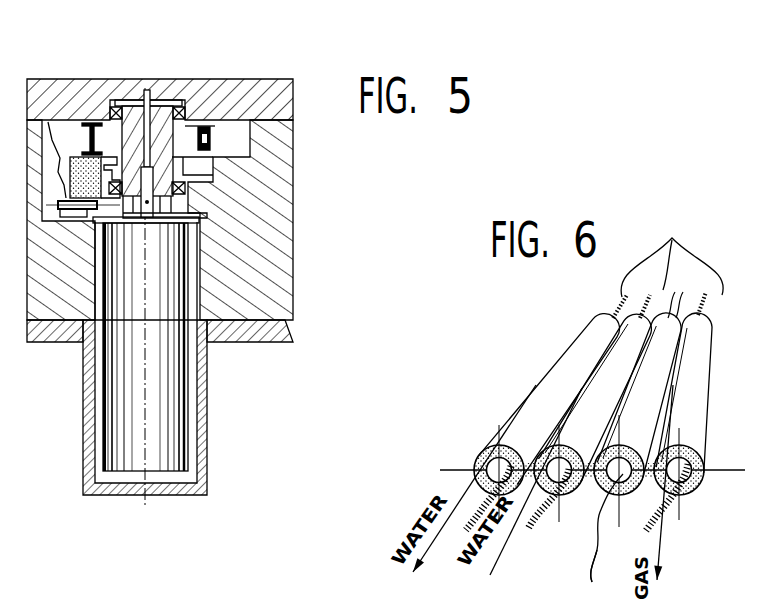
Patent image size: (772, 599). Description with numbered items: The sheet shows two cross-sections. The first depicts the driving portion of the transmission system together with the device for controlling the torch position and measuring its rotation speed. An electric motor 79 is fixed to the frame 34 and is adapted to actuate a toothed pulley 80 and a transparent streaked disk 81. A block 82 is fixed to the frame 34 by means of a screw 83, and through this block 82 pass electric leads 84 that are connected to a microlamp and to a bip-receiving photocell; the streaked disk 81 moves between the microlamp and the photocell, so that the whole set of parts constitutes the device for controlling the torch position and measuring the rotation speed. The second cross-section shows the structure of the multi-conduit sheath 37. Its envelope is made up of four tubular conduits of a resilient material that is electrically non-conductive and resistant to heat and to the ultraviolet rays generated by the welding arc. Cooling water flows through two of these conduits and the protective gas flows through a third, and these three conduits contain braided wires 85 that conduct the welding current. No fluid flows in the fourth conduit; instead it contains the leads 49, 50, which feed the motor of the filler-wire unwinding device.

In FIG. 5, the frame 34 is at (260, 253).
In FIG. 5, the electric motor 79 is at (166, 405).
In FIG. 5, the toothed pulley 80 is at (148, 165).
In FIG. 5, the transparent streaked disk 81 is at (196, 167).
In FIG. 5, the block 82 is at (106, 168).
In FIG. 5, the screw 83 is at (88, 150).
In FIG. 5, the electric leads 84 is at (70, 160).
In FIG. 6, the multi-conduit sheath 37 is at (574, 362).
In FIG. 6, the braided wires 85 is at (679, 233).
In FIG. 6, the lead 49 is at (593, 530).
In FIG. 6, the lead 50 is at (592, 556).